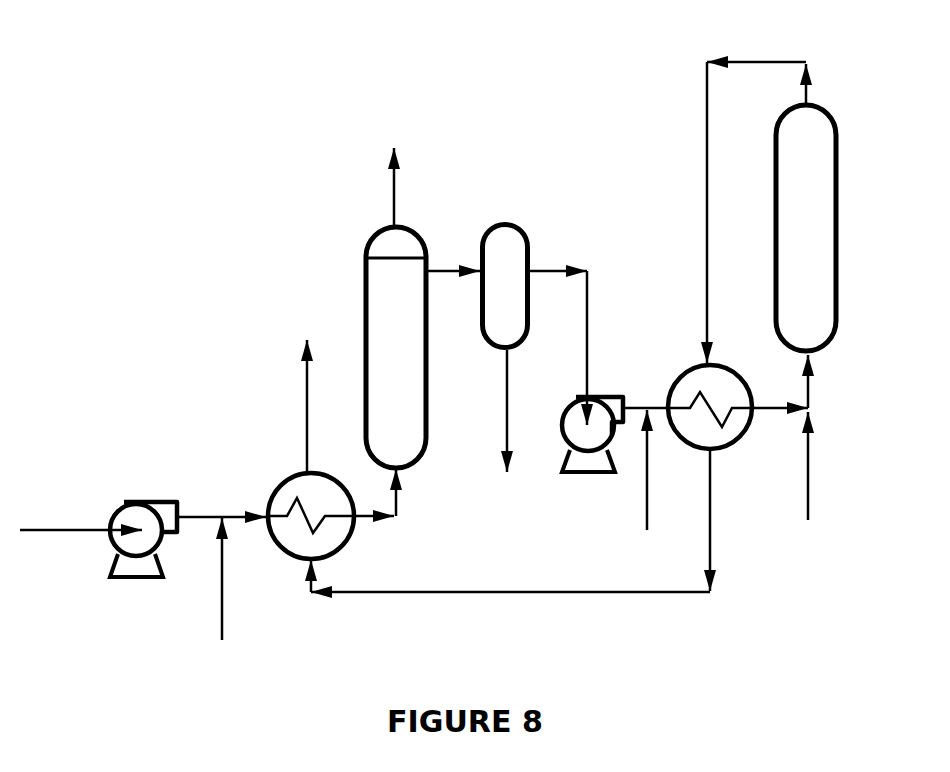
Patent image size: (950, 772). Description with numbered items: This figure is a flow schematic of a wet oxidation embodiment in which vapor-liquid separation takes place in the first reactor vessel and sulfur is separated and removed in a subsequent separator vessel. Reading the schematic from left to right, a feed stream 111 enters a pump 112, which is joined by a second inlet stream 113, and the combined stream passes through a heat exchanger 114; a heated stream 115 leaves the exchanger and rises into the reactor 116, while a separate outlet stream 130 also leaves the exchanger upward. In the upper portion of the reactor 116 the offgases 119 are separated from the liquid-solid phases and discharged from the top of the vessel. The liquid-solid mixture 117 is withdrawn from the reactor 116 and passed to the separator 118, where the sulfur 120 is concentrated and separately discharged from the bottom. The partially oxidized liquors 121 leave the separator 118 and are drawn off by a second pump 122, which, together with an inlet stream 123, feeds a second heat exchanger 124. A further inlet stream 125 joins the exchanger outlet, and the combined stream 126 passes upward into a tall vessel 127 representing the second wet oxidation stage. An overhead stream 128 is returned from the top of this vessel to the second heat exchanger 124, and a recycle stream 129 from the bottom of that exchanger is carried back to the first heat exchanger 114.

The feed line 111 is at (48, 530).
The feed pump 112 is at (142, 515).
The inlet line 113 is at (222, 603).
The heat exchanger 114 is at (305, 486).
The heated feed line 115 is at (397, 494).
The reactor 116 is at (388, 240).
The liquid-solid mixture 117 is at (433, 271).
The separator 118 is at (508, 237).
The offgases 119 is at (395, 187).
The sulfur 120 is at (506, 395).
The partially oxidized liquors 121 is at (588, 345).
The pump 122 is at (577, 410).
The inlet line 123 is at (648, 493).
The second heat exchanger 124 is at (728, 390).
The inlet line 125 is at (810, 473).
The feed line to vessel 126 is at (810, 383).
The column vessel 127 is at (810, 122).
The overhead return line 128 is at (728, 53).
The recycle line 129 is at (466, 591).
The outlet line 130 is at (307, 379).